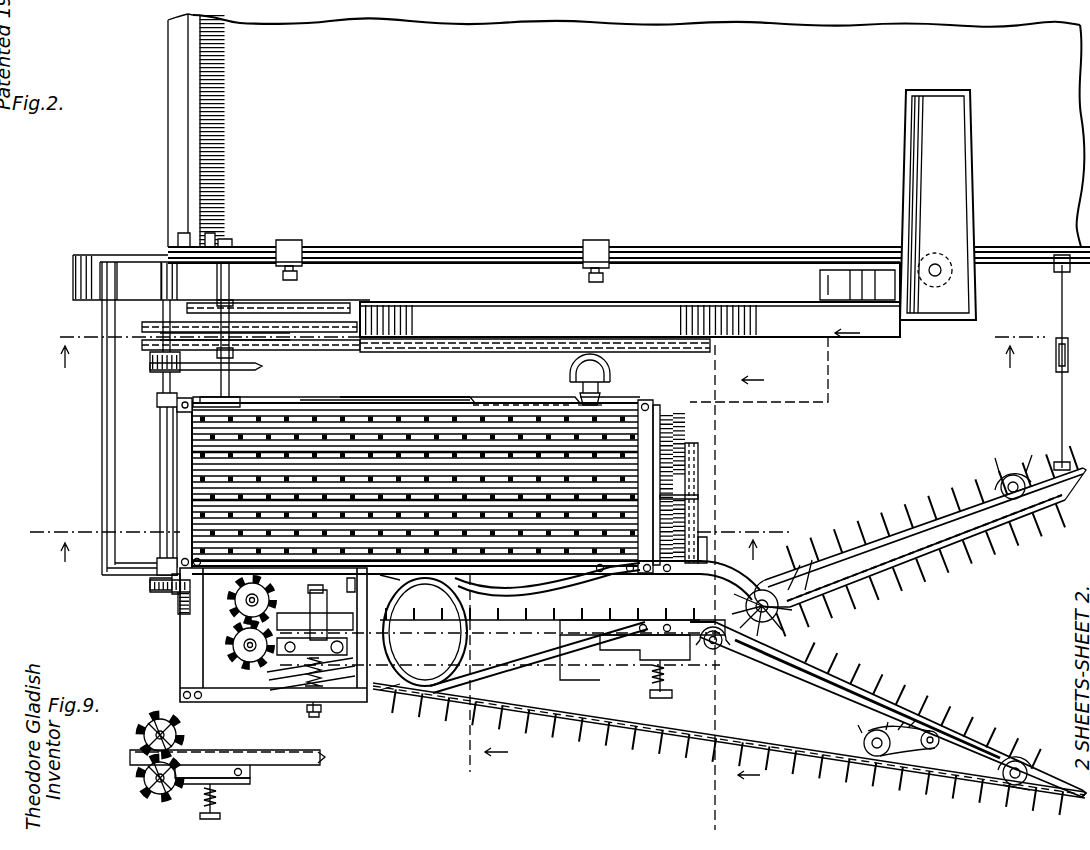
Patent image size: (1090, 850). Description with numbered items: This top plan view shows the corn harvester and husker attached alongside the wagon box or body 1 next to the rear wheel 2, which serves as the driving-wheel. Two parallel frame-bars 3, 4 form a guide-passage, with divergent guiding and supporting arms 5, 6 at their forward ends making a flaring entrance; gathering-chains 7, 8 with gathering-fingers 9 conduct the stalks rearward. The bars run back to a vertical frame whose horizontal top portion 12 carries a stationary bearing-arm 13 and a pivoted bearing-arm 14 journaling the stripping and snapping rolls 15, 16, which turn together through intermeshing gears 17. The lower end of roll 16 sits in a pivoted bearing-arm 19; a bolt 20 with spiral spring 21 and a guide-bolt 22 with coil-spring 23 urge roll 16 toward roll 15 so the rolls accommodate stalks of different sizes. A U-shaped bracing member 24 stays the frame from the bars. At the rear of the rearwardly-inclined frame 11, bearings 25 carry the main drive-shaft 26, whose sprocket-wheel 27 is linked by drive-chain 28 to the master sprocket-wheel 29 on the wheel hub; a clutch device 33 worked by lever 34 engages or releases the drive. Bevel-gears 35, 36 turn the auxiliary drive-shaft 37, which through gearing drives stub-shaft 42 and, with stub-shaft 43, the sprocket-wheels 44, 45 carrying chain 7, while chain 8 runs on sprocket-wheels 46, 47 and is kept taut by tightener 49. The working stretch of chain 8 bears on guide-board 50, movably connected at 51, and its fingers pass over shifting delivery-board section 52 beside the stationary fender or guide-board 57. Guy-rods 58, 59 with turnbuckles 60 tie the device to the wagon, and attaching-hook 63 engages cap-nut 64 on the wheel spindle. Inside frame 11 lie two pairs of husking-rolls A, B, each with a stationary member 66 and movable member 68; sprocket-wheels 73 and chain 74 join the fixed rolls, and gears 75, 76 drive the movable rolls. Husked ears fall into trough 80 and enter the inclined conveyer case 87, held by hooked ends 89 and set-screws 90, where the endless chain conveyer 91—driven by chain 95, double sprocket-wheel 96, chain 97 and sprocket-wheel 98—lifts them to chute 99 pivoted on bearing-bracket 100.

In FIG. 2, the wagon box or body 1 is at (626, 130).
In FIG. 2, the rear wheel 2 is at (630, 322).
In FIG. 2, the frame-bar 3 is at (739, 585).
In FIG. 2, the frame-bar 4 is at (668, 598).
In FIG. 9, the frame-bar 4 is at (322, 760).
In FIG. 2, the guiding and supporting arm 5 is at (940, 560).
In FIG. 2, the guiding and supporting arm 6 is at (800, 690).
In FIG. 2, the gathering-chain 7 is at (905, 520).
In FIG. 2, the gathering-chain 8 is at (620, 738).
In FIG. 2, the gathering-fingers 9 is at (560, 720).
In FIG. 2, the rearwardly-inclined frame 11 is at (385, 405).
In FIG. 2, the horizontal top portion 12 is at (362, 700).
In FIG. 2, the stationary bearing-arm 13 is at (290, 610).
In FIG. 2, the pivoted bearing-arm 14 is at (322, 633).
In FIG. 2, the stripping and snapping roll 15 is at (227, 602).
In FIG. 9, the stripping and snapping roll 15 is at (138, 730).
In FIG. 2, the stripping and snapping roll 16 is at (240, 672).
In FIG. 9, the stripping and snapping roll 16 is at (138, 778).
In FIG. 2, the intermeshing gears 17 is at (225, 645).
In FIG. 9, the bearing-arm 19 is at (250, 775).
In FIG. 2, the bolt 20 is at (310, 707).
In FIG. 2, the spiral spring 21 is at (305, 688).
In FIG. 9, the guide-bolt 22 is at (200, 812).
In FIG. 9, the coil-spring 23 is at (218, 805).
In FIG. 2, the U-shaped bracing member 24 is at (480, 672).
In FIG. 2, the bearings 25 is at (160, 402).
In FIG. 2, the main drive-shaft 26 is at (165, 440).
In FIG. 2, the sprocket-wheel 27 is at (145, 345).
In FIG. 2, the sprocket drive-chain 28 is at (447, 348).
In FIG. 2, the master sprocket-wheel 29 is at (556, 356).
In FIG. 2, the clutch device 33 is at (155, 368).
In FIG. 2, the actuating lever 34 is at (258, 368).
In FIG. 2, the bevel-gear 35 is at (148, 580).
In FIG. 2, the bevel-gear 36 is at (165, 592).
In FIG. 2, the auxiliary drive-shaft 37 is at (598, 575).
In FIG. 2, the stub-shaft 42 is at (780, 618).
In FIG. 2, the stub-shaft 43 is at (1020, 492).
In FIG. 2, the sprocket-wheel 44 is at (792, 570).
In FIG. 2, the sprocket-wheel 45 is at (1015, 465).
In FIG. 2, the sprocket-wheel 46 is at (1006, 782).
In FIG. 2, the sprocket-wheel 47 is at (718, 648).
In FIG. 2, the automatic tightener 49 is at (868, 730).
In FIG. 2, the guide-board 50 is at (625, 648).
In FIG. 2, the movable connection 51 is at (652, 668).
In FIG. 2, the shifting delivery-board section 52 is at (510, 626).
In FIG. 2, the stationary inclined fender or guide-board 57 is at (590, 680).
In FIG. 2, the guy-rod 58 is at (1055, 287).
In FIG. 2, the guy-rod 59 is at (230, 288).
In FIG. 2, the turnbuckle 60 is at (240, 322).
In FIG. 2, the attaching-hook 63 is at (622, 384).
In FIG. 2, the cap-nut 64 is at (606, 395).
In FIG. 2, the stationary husking-roll member 66 is at (360, 430).
In FIG. 2, the movable husking-roll member 68 is at (325, 405).
In FIG. 2, the sprocket-wheels 73 is at (700, 448).
In FIG. 2, the chain 74 is at (700, 497).
In FIG. 2, the gear 75 is at (700, 478).
In FIG. 2, the gear 76 is at (685, 418).
In FIG. 2, the conducting trough or chute 80 is at (112, 420).
In FIG. 2, the inclined conveyer frame or case 87 is at (440, 250).
In FIG. 2, the hooked ends 89 is at (287, 246).
In FIG. 2, the set-screws 90 is at (300, 268).
In FIG. 2, the endless chain conveyer 91 is at (818, 283).
In FIG. 2, the chain 95 is at (297, 335).
In FIG. 2, the double sprocket-wheel 96 is at (330, 318).
In FIG. 2, the chain 97 is at (195, 318).
In FIG. 2, the sprocket-wheel 98 is at (150, 323).
In FIG. 2, the chute 99 is at (934, 92).
In FIG. 2, the bearing-bracket 100 is at (948, 262).
In FIG. 2, the pair of husking-rolls A is at (190, 500).
In FIG. 2, the pair of husking-rolls B is at (455, 403).